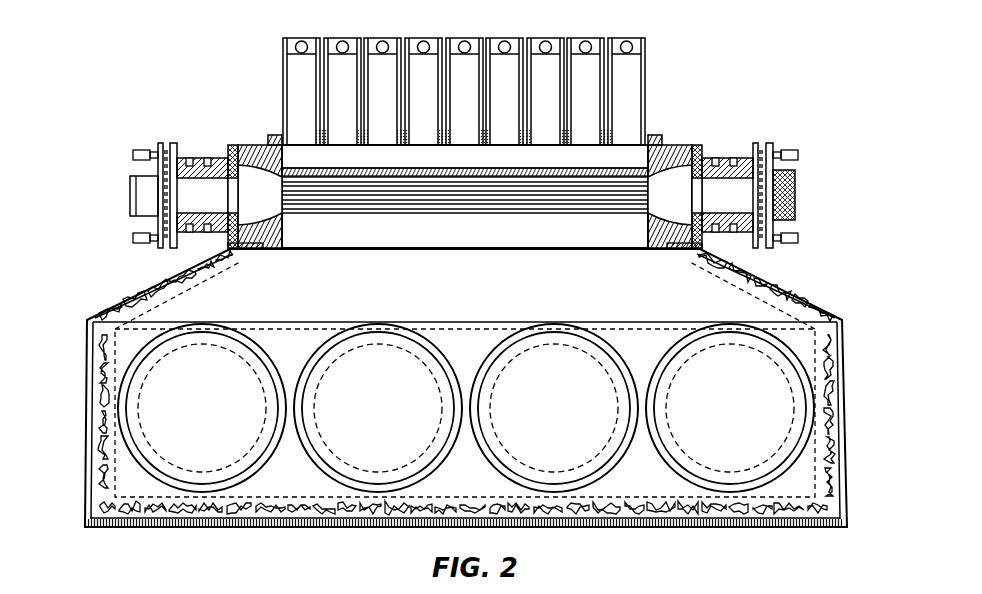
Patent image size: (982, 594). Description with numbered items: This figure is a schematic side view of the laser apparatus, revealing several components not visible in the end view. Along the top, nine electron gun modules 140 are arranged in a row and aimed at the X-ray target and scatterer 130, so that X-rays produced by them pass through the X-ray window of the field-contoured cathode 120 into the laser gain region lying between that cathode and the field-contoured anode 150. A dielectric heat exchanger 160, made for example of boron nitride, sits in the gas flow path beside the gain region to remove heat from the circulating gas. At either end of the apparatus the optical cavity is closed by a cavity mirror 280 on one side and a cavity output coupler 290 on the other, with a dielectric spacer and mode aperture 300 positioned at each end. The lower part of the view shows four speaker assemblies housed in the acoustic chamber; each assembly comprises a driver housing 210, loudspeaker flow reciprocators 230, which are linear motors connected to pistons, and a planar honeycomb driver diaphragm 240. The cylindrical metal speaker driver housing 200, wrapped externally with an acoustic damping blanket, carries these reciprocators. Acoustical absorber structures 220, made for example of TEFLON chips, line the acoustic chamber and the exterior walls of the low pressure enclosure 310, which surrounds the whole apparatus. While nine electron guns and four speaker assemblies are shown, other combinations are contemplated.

The field-contoured cathode 120 is at (607, 167).
The X-ray target and scatterer 130 is at (307, 143).
The electron gun modules 140 is at (282, 75).
The field-contoured anode 150 is at (333, 217).
The dielectric heat exchanger 160 is at (470, 197).
The speaker driver housing 200 is at (807, 458).
The flow corridor 210 is at (693, 298).
The acoustical absorber structures 220 is at (100, 388).
The loudspeaker flow reciprocators 230 is at (803, 392).
The loudspeaker driver diaphragm 240 is at (145, 377).
The cavity mirror 280 is at (125, 207).
The cavity output coupler 290 is at (797, 190).
The dielectric spacer and mode aperture 300 is at (190, 153).
The low pressure enclosure 310 is at (83, 458).